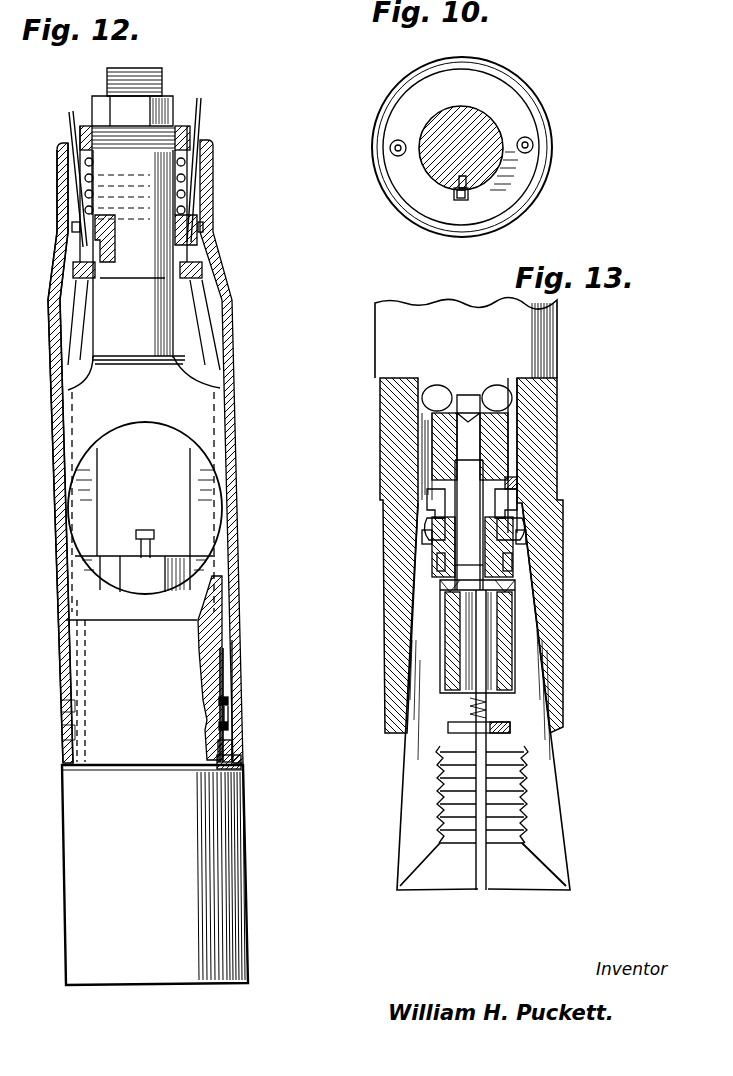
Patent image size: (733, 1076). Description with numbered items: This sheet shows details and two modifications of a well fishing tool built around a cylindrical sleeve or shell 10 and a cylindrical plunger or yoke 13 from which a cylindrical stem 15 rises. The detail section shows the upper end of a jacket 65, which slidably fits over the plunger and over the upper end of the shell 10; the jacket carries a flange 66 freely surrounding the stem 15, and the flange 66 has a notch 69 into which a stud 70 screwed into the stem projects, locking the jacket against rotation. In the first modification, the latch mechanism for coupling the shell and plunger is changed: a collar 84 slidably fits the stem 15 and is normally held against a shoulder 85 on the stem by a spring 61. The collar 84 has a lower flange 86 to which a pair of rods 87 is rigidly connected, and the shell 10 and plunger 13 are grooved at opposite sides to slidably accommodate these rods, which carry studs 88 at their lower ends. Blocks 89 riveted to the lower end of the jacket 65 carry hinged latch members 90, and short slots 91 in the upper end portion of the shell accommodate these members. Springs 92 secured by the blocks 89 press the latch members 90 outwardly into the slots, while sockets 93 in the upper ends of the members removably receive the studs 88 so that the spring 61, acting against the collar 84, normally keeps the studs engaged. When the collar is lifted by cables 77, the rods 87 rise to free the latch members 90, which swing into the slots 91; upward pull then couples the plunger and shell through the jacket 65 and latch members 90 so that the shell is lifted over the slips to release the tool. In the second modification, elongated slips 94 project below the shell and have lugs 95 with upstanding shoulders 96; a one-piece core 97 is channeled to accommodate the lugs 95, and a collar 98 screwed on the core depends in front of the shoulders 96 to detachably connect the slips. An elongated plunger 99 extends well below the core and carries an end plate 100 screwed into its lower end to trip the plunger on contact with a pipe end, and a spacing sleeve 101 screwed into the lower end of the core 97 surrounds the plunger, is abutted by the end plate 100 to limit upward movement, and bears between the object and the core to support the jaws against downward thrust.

In FIG. 12, the cylindrical sleeve or shell 10 is at (155, 875).
In FIG. 13, the cylindrical sleeve or shell 10 is at (556, 603).
In FIG. 12, the cylindrical plunger or yoke 13 is at (200, 420).
In FIG. 12, the cylindrical stem 15 is at (139, 257).
In FIG. 10, the cylindrical stem 15 is at (464, 118).
In FIG. 12, the spring 61 is at (200, 203).
In FIG. 12, the jacket 65 is at (236, 508).
In FIG. 10, the flange 66 is at (515, 115).
In FIG. 10, the notch 69 is at (466, 200).
In FIG. 10, the stud 70 is at (453, 198).
In FIG. 12, the cables 77 is at (204, 114).
In FIG. 10, the cables 77 is at (536, 144).
In FIG. 12, the collar 84 is at (196, 232).
In FIG. 12, the shoulder 85 is at (117, 283).
In FIG. 12, the lower flange 86 is at (205, 268).
In FIG. 12, the rods 87 is at (213, 334).
In FIG. 12, the studs 88 is at (230, 692).
In FIG. 12, the blocks 89 is at (238, 752).
In FIG. 12, the latch members 90 is at (230, 715).
In FIG. 12, the short slots 91 is at (208, 678).
In FIG. 12, the springs 92 is at (236, 728).
In FIG. 12, the sockets 93 is at (230, 702).
In FIG. 13, the elongated slips 94 is at (532, 672).
In FIG. 13, the lugs 95 is at (512, 524).
In FIG. 13, the upstanding shoulders 96 is at (520, 512).
In FIG. 13, the core 97 is at (505, 460).
In FIG. 13, the collar 98 is at (519, 484).
In FIG. 13, the elongated plunger 99 is at (470, 632).
In FIG. 13, the end plate 100 is at (500, 724).
In FIG. 13, the spacing sleeve 101 is at (505, 643).